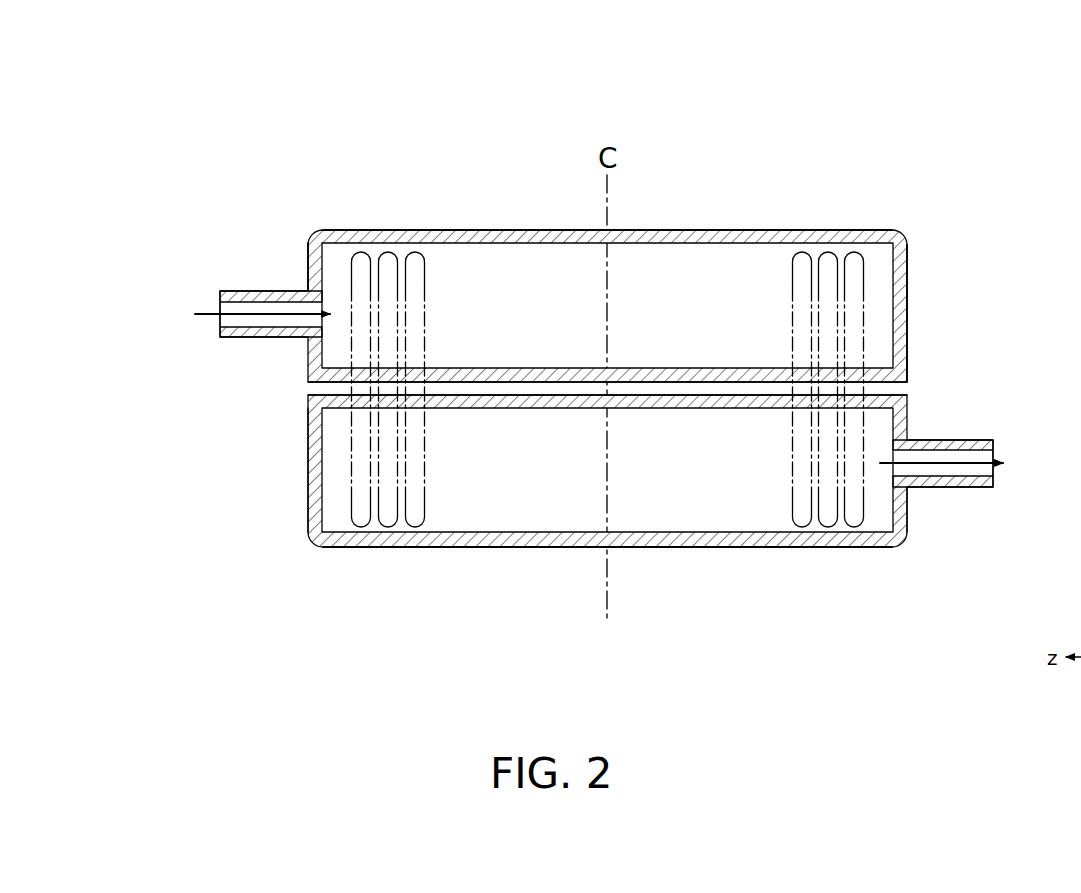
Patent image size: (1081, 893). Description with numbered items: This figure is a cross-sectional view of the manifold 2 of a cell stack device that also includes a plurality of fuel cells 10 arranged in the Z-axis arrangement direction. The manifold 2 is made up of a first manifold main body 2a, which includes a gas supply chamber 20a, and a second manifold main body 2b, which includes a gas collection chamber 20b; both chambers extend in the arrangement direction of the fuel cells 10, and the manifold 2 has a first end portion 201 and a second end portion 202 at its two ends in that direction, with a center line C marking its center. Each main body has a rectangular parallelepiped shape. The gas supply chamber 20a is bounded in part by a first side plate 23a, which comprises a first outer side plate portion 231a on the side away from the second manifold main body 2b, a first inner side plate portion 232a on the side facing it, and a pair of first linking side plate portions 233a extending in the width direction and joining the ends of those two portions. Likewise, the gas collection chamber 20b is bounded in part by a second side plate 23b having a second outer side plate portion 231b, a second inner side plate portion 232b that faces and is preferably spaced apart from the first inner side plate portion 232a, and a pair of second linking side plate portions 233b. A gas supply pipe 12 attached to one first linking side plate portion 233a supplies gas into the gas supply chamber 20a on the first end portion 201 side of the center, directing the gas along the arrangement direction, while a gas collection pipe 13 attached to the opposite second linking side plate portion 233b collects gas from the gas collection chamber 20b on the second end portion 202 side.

The manifold 2 is at (796, 128).
The first manifold main body 2a is at (922, 237).
The second manifold main body 2b is at (922, 422).
The fuel cells 10 is at (416, 250).
The gas supply pipe 12 is at (250, 291).
The gas collection pipe 13 is at (985, 488).
The gas supply chamber 20a is at (737, 330).
The gas collection chamber 20b is at (737, 495).
The first side plate 23a is at (660, 230).
The second side plate 23b is at (695, 548).
The first end portion 201 is at (350, 230).
The second end portion 202 is at (858, 230).
The first outer side plate portion 231a is at (517, 230).
The second outer side plate portion 231b is at (497, 548).
The first inner side plate portion 232a is at (515, 368).
The second inner side plate portion 232b is at (525, 409).
The first linking side plate portions 233a is at (307, 265).
The second linking side plate portions 233b is at (308, 452).